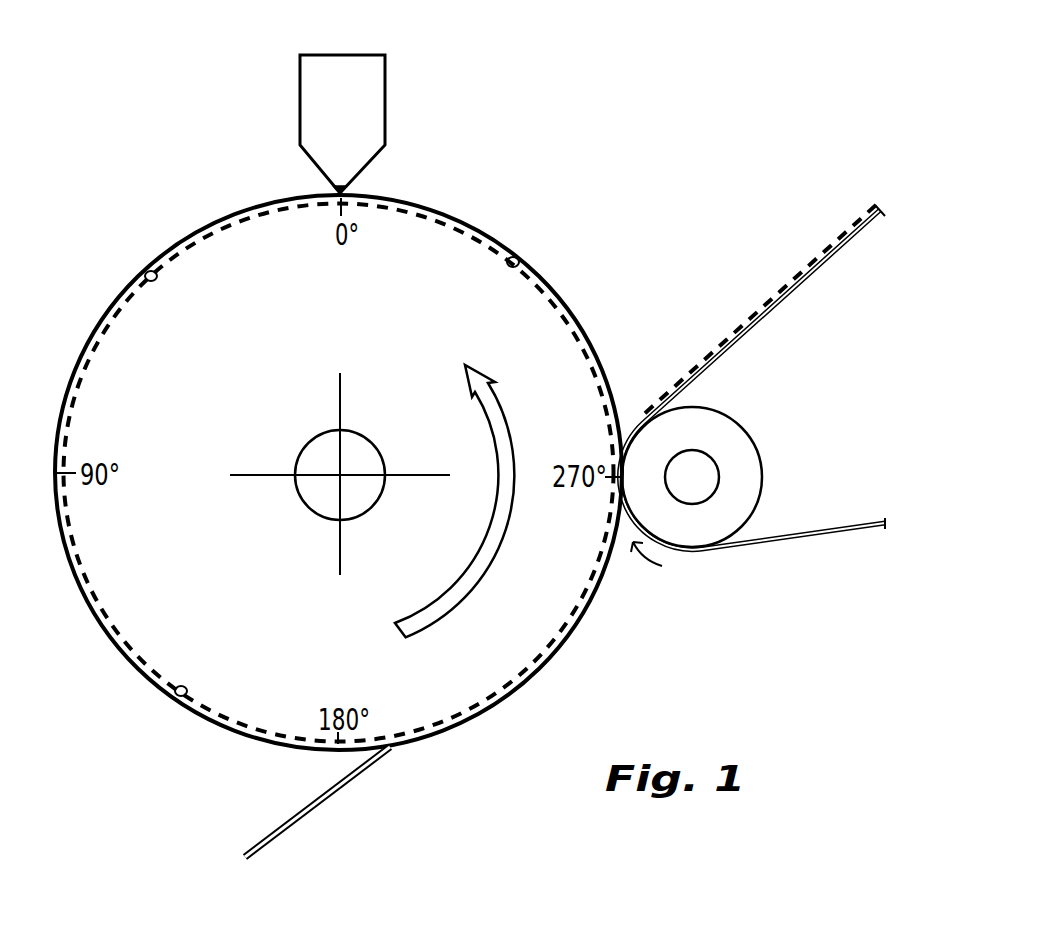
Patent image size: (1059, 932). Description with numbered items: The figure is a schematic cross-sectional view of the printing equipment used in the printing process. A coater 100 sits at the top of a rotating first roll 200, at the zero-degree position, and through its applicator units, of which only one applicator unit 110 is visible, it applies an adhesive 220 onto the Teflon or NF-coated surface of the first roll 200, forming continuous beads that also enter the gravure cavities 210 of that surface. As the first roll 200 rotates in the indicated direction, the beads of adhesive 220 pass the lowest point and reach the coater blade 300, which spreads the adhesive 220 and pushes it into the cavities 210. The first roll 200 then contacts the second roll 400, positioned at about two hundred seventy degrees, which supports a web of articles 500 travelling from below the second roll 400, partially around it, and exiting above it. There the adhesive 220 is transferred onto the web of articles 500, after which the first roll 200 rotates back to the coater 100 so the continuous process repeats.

The coater 100 is at (370, 100).
The applicator unit 110 is at (346, 192).
The first roll 200 is at (130, 357).
The gravure cavities 210 is at (147, 268).
The adhesive 220 is at (197, 232).
The coater blade 300 is at (312, 808).
The second roll 400 is at (745, 465).
The web of articles 500 is at (800, 288).